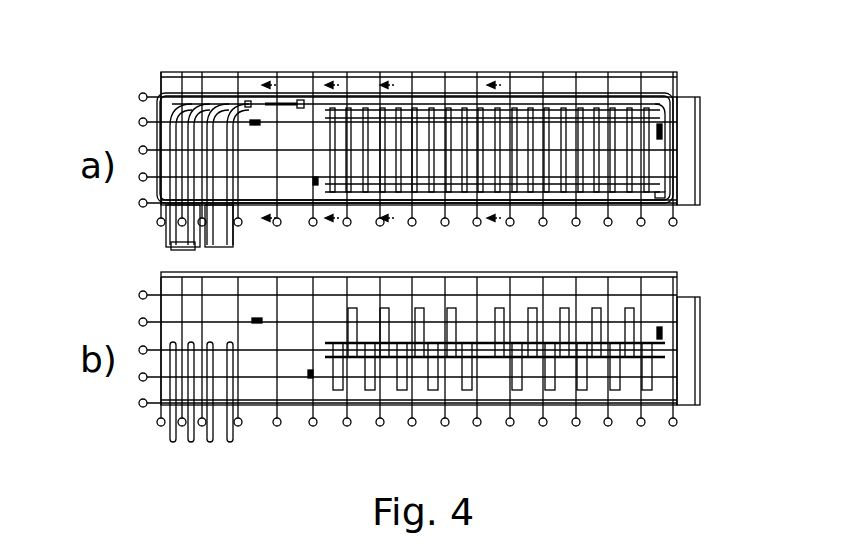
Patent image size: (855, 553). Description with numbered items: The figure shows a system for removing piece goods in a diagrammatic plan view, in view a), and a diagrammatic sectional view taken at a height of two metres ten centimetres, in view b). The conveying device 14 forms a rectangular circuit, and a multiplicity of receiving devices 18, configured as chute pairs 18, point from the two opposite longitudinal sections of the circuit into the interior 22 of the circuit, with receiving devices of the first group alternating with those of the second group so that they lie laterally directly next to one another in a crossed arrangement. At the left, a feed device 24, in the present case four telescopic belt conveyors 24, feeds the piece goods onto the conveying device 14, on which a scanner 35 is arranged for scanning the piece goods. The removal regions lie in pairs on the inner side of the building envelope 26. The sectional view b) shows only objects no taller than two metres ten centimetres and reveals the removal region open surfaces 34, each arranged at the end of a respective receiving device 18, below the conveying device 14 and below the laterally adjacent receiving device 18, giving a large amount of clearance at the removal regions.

The conveying device 14 is at (160, 99).
The receiving devices 18 is at (650, 165).
The interior of the circuit 22 is at (308, 144).
The feed device 24 is at (165, 215).
The building envelope 26 is at (685, 207).
The removal region open surface 34 is at (468, 390).
The scanner 35 is at (300, 100).